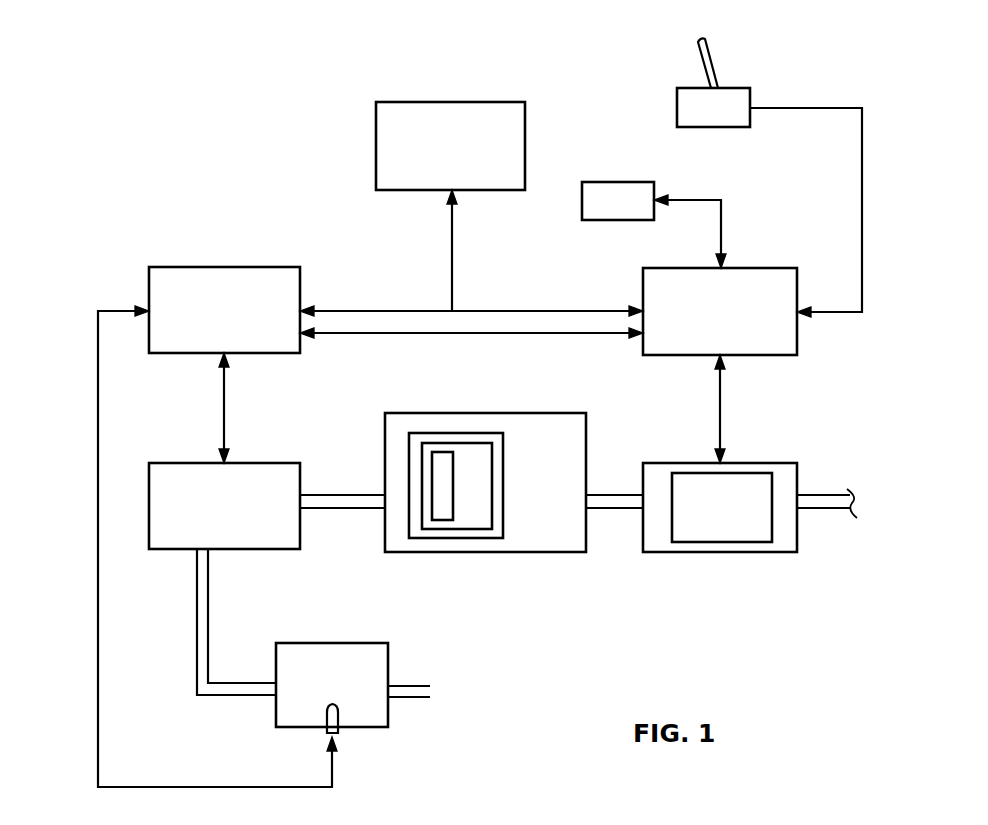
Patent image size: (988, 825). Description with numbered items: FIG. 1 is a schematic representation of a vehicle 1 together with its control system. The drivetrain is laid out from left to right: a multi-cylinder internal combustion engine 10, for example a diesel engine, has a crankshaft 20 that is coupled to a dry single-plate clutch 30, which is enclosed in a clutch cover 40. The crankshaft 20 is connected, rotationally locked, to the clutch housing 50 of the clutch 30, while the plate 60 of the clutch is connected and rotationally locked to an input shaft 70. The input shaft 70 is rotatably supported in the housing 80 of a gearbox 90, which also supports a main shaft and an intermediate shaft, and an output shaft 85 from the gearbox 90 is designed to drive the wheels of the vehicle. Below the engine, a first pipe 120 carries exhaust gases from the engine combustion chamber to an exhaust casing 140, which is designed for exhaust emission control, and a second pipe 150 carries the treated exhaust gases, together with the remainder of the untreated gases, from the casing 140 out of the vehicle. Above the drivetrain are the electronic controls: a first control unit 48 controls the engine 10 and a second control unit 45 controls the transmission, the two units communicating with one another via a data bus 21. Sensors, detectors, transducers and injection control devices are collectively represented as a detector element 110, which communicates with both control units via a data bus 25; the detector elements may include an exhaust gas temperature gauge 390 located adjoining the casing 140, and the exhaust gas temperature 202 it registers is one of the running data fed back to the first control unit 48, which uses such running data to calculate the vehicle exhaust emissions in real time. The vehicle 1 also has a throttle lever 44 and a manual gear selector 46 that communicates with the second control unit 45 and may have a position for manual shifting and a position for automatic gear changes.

The vehicle 1 is at (247, 143).
The multi-cylinder internal combustion engine 10 is at (148, 519).
The crankshaft 20 is at (318, 510).
The data bus 21 is at (502, 337).
The data bus 25 is at (452, 250).
The dry single-plate clutch 30 is at (470, 433).
The clutch cover 40 is at (537, 552).
The throttle lever 44 is at (582, 202).
The second control unit 45 is at (798, 348).
The manual gear selector 46 is at (677, 108).
The first control unit 48 is at (252, 353).
The clutch housing 50 is at (457, 443).
The plate 60 is at (442, 520).
The input shaft 70 is at (608, 495).
The housing 80 is at (772, 500).
The output shaft 85 is at (820, 512).
The gearbox 90 is at (698, 552).
The detector element 110 is at (463, 102).
The first pipe 120 is at (210, 638).
The exhaust casing 140 is at (388, 717).
The second pipe 150 is at (408, 686).
The exhaust gas temperature 202 is at (98, 733).
The exhaust gas temperature gauge 390 is at (333, 735).